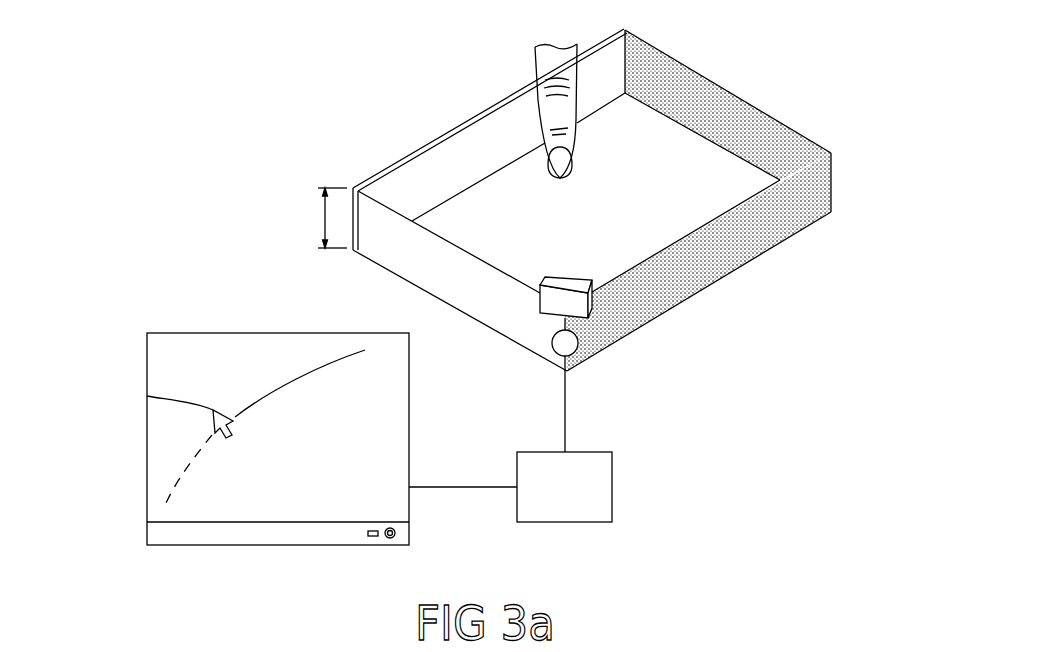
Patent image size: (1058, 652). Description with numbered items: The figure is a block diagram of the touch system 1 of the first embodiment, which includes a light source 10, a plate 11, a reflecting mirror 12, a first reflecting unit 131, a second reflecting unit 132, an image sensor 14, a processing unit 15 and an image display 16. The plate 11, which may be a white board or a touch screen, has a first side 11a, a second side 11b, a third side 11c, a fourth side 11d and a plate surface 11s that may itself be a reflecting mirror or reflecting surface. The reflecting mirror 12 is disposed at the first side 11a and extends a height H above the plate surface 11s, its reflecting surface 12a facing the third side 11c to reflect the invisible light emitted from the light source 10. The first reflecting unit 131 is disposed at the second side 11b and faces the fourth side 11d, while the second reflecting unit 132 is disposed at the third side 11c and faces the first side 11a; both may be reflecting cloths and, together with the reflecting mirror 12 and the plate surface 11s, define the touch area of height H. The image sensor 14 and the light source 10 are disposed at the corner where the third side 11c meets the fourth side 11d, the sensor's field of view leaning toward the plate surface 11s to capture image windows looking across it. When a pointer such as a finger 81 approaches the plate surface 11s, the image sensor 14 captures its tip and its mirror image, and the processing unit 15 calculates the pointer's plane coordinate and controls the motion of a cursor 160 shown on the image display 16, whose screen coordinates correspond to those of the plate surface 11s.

The touch system 1 is at (466, 274).
The light source 10 is at (558, 347).
The plate 11 is at (565, 195).
The first side 11a is at (422, 208).
The second side 11b is at (762, 173).
The third side 11c is at (703, 290).
The fourth side 11d is at (388, 268).
The plate surface 11s is at (627, 137).
The reflecting mirror 12 is at (437, 178).
The reflecting surface 12a is at (482, 142).
The first reflecting unit 131 is at (733, 120).
The second reflecting unit 132 is at (777, 233).
The image sensor 14 is at (540, 308).
The processing unit 15 is at (612, 500).
The image display 16 is at (282, 439).
The cursor 160 is at (147, 396).
The finger 81 is at (557, 72).